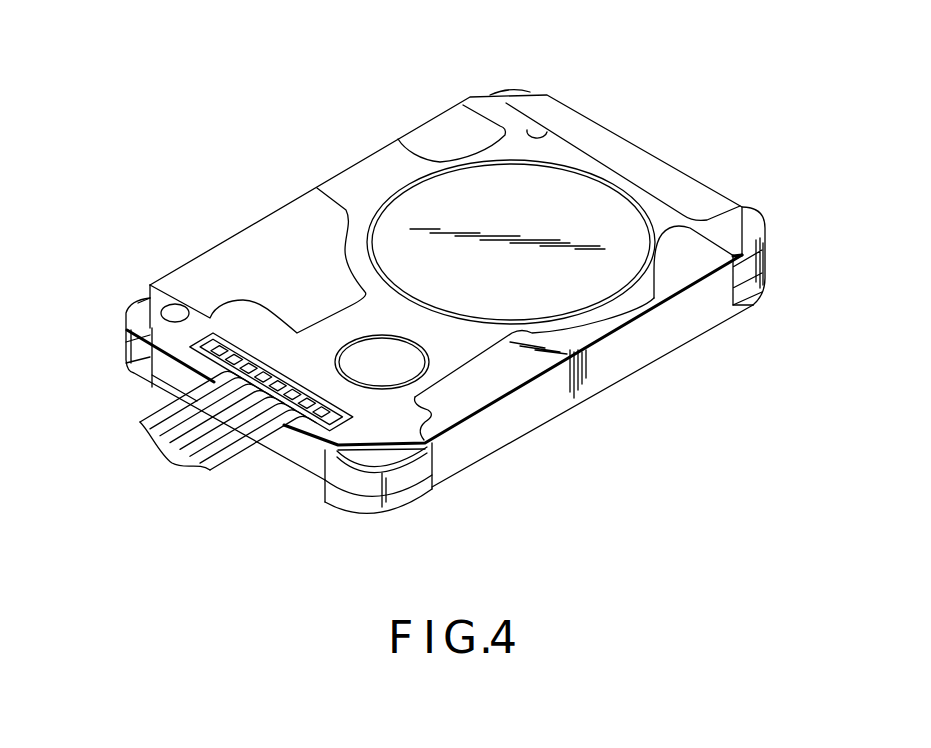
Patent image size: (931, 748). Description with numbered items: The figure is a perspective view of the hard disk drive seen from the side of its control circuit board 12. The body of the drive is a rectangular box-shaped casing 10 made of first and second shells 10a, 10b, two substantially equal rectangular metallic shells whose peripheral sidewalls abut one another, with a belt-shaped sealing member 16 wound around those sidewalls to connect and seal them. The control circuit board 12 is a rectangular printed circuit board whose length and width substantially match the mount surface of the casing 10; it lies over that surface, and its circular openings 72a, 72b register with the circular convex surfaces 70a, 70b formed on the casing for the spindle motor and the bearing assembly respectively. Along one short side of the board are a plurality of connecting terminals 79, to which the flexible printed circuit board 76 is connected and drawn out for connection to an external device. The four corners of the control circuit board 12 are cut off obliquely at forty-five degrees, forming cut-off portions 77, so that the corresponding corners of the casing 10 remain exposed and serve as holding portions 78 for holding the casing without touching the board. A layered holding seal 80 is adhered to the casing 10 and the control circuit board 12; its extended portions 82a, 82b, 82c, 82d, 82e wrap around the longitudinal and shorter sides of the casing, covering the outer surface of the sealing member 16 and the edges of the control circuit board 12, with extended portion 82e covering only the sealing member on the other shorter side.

The casing 10 is at (572, 418).
The first shell 10a is at (392, 480).
The second shell 10b is at (372, 503).
The control circuit board 12 is at (333, 188).
The sealing member 16 is at (746, 283).
The circular convex surface 70a is at (445, 187).
The circular convex surface 70b is at (358, 342).
The circular opening 72a is at (613, 190).
The circular opening 72b is at (414, 343).
The flexible printed circuit board 76 is at (227, 467).
The cut-off portion 77 is at (528, 91).
The holding portion 78 is at (497, 86).
The connecting terminal 79 is at (300, 400).
The holding seal 80 is at (525, 443).
The extended portion 82a is at (612, 353).
The extended portion 82b is at (233, 253).
The extended portion 82c is at (452, 128).
The extended portion 82d is at (682, 177).
The extended portion 82e is at (152, 387).